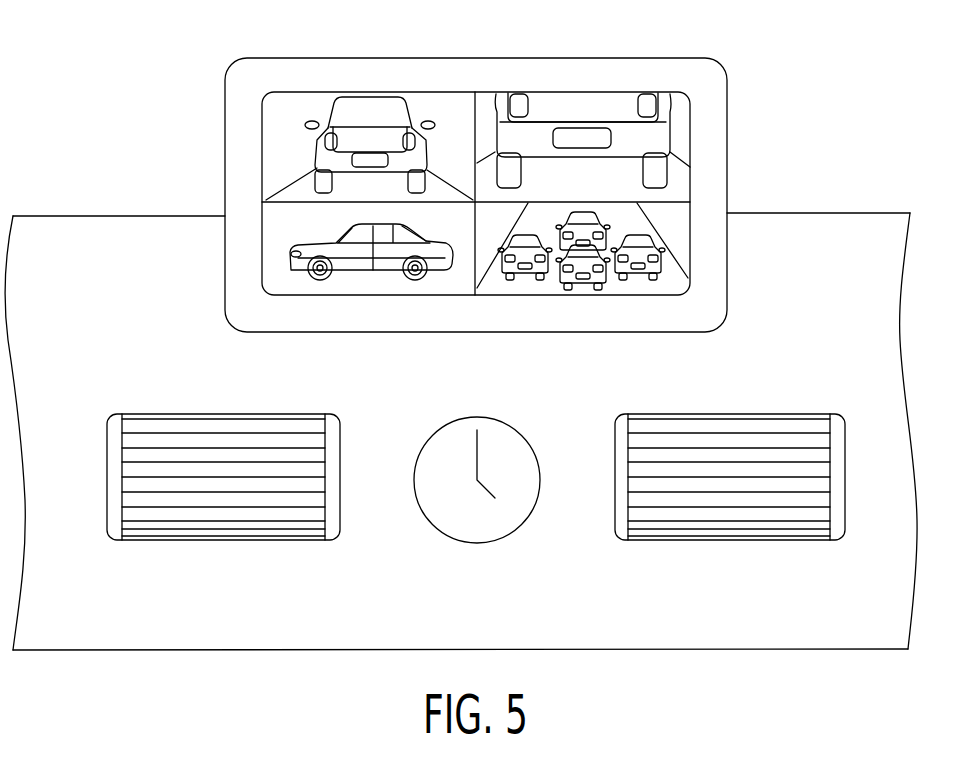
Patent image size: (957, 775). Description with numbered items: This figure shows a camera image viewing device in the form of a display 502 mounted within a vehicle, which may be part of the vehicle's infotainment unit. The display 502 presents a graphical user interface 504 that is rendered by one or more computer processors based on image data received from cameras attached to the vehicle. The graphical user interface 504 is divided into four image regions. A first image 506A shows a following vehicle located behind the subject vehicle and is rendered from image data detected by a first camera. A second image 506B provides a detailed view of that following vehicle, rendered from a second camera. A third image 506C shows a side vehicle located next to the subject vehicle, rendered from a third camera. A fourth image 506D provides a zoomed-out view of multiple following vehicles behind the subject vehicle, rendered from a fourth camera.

The display 502 is at (288, 80).
The graphical user interface 504 is at (448, 92).
The first image 506A is at (277, 162).
The second image 506B is at (670, 97).
The third image 506C is at (263, 288).
The fourth image 506D is at (668, 228).